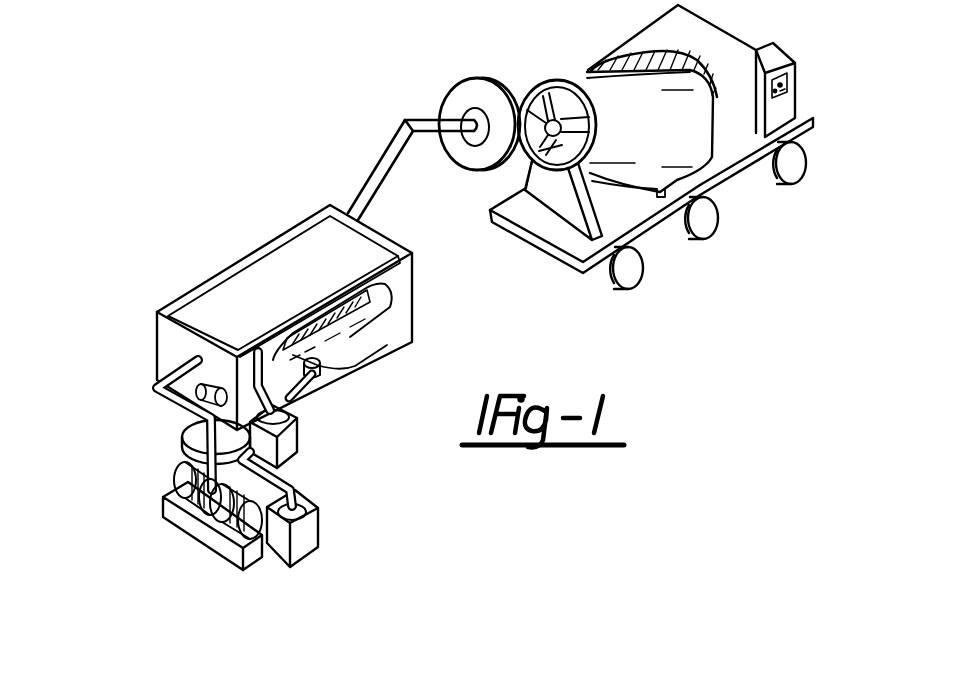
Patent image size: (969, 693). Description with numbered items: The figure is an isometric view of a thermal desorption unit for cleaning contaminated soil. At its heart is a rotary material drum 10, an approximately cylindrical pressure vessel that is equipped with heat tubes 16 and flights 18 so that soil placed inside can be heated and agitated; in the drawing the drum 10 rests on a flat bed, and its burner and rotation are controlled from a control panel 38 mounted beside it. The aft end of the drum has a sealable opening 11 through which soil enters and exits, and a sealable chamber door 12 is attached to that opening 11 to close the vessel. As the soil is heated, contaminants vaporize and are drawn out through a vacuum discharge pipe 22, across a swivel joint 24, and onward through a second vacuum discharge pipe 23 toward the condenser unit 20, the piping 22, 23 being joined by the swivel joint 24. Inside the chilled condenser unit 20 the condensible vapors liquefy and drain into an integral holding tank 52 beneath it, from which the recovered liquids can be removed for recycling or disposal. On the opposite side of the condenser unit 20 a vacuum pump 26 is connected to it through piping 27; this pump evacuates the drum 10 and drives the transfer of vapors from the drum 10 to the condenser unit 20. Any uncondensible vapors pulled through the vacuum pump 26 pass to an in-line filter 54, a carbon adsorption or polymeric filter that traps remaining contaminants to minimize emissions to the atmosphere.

The rotary material drum 10 is at (597, 93).
The sealable opening 11 is at (530, 163).
The sealable chamber door 12 is at (465, 88).
The heat tubes 16 is at (527, 110).
The flights 18 is at (556, 119).
The condenser unit 20 is at (398, 284).
The vacuum discharge pipe 22 is at (428, 132).
The vacuum discharge pipe 23 is at (373, 167).
The swivel joint 24 is at (405, 120).
The vacuum pump 26 is at (173, 513).
The piping 27 is at (160, 392).
The control panel 38 is at (785, 103).
The holding tank 52 is at (335, 380).
The in-line filter 54 is at (297, 440).